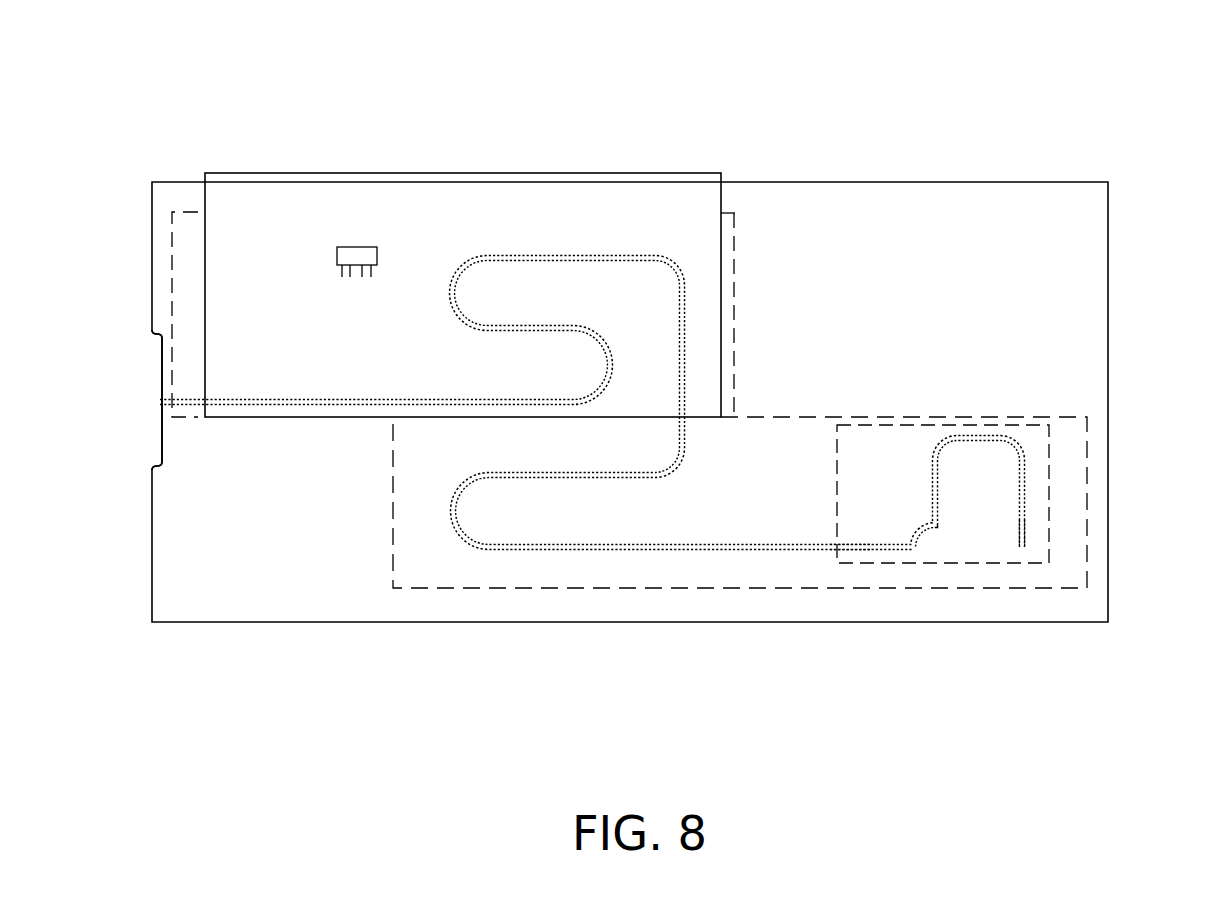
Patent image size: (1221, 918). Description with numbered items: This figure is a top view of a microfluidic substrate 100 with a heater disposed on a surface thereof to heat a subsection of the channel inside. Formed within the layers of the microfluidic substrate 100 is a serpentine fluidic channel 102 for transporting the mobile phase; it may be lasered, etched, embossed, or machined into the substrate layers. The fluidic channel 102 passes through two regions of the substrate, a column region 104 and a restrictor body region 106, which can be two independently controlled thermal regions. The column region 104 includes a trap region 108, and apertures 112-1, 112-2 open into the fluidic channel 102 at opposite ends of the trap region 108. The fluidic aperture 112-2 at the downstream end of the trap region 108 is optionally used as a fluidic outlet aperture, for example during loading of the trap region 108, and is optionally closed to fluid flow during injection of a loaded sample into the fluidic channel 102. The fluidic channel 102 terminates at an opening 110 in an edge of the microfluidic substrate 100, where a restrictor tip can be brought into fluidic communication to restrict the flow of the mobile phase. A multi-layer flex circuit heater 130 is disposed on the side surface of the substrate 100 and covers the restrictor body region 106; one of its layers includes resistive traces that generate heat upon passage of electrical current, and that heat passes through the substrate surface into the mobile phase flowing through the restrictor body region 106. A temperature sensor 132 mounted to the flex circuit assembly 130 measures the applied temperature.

The microfluidic substrate 100 is at (1110, 193).
The fluidic channel 102 is at (313, 400).
The column region 104 is at (770, 425).
The restrictor body region 106 is at (735, 213).
The trap region 108 is at (1050, 480).
The opening 110 is at (140, 400).
The aperture 112-1 is at (1022, 547).
The fluidic aperture 112-2 is at (850, 543).
The flex circuit heater 130 is at (325, 182).
The temperature sensor 132 is at (362, 255).